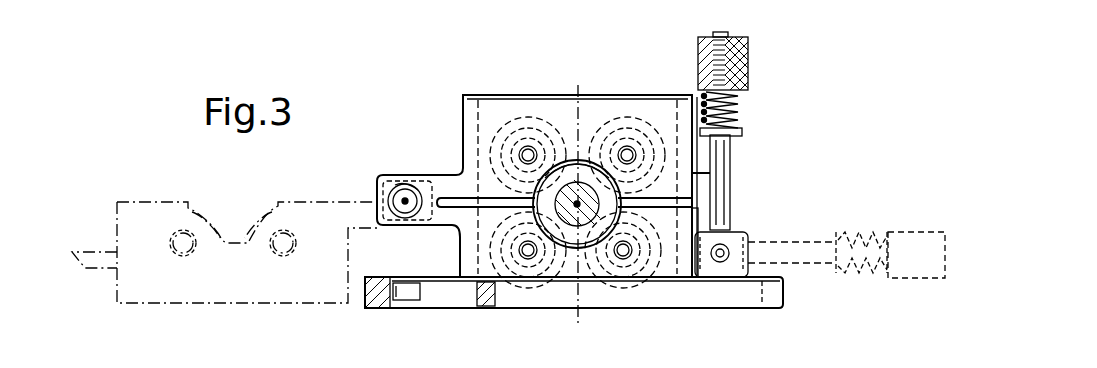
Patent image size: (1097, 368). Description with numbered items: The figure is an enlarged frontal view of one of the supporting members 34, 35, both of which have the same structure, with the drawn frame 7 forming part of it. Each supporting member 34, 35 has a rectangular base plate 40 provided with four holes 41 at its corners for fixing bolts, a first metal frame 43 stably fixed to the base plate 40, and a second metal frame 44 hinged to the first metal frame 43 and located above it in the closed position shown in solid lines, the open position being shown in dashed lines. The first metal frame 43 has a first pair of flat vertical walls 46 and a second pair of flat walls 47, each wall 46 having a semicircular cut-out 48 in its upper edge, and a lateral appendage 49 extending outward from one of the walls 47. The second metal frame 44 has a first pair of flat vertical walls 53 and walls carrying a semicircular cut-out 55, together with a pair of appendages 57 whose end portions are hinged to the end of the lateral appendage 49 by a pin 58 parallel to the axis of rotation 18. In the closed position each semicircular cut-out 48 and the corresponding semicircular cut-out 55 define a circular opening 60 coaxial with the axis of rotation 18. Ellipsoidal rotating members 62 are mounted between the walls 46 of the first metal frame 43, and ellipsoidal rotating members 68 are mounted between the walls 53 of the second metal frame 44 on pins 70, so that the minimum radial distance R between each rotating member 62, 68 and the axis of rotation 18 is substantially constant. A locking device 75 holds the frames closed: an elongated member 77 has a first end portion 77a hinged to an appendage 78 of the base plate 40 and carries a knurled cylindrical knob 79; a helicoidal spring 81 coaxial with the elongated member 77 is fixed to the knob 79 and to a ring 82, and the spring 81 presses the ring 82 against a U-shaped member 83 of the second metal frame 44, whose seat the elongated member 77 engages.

The housing 7 is at (468, 240).
The axis of rotation 18 is at (738, 170).
The supporting member 34 is at (798, 90).
The supporting member 35 is at (865, 33).
The rectangular base plate 40 is at (518, 297).
The hole 41 is at (416, 292).
The first metal frame 43 is at (708, 226).
The second metal frame 44 is at (608, 78).
The first pair of flat vertical walls 46 is at (585, 266).
The second pair of flat walls 47 is at (447, 290).
The semicircular cut-out 48 is at (605, 262).
The lateral appendage 49 is at (448, 216).
The first pair of flat vertical walls 53 is at (540, 112).
The semicircular cut-out 55 is at (598, 163).
The appendage 57 is at (425, 180).
The pin 58 is at (402, 193).
The circular opening 60 is at (495, 272).
The rotating member 62 is at (548, 268).
The rotating member 68 is at (567, 118).
The pin 70 is at (527, 150).
The locking device 75 is at (848, 211).
The elongated member 77 is at (727, 182).
The first end portion 77a is at (747, 243).
The appendage 78 is at (733, 270).
The knurled cylindrical knob 79 is at (749, 68).
The helicoidal spring 81 is at (742, 97).
The ring 82 is at (745, 130).
The U-shaped member 83 is at (740, 147).
The minimum radial distance R is at (572, 198).